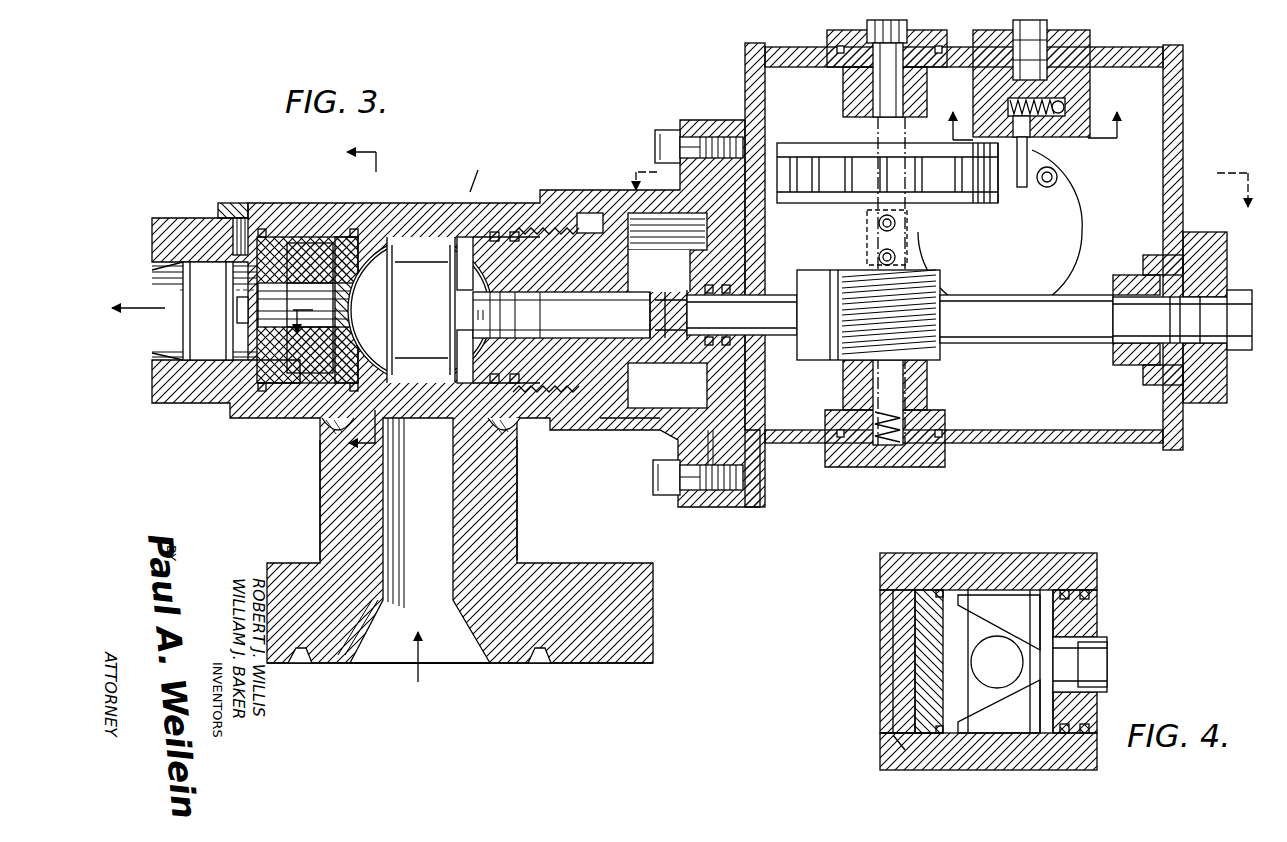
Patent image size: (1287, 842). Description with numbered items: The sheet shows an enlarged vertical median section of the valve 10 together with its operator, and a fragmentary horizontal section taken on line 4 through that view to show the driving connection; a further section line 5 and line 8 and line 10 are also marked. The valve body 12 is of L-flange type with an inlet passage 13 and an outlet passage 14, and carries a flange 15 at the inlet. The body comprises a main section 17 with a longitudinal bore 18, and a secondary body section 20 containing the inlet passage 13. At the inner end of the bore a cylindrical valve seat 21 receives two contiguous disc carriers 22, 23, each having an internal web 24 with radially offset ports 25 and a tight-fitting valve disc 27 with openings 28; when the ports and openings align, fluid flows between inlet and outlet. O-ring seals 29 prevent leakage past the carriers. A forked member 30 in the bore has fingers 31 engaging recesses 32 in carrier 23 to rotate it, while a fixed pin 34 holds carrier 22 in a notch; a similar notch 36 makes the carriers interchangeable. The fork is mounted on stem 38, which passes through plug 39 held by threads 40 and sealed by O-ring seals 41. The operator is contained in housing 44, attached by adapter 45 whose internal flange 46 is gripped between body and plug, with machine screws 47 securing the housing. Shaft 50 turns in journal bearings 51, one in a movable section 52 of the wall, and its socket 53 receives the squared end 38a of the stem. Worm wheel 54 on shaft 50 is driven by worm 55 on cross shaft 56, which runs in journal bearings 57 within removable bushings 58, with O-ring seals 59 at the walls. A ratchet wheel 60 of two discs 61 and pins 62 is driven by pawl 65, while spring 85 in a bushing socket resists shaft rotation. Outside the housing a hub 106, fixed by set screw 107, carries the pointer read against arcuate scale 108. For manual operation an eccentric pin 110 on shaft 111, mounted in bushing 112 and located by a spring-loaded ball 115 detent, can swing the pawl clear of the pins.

In FIG. 3, the section line 4- 4 is at (396, 337).
In FIG. 3, the section line 5-5 / flow passage 5 is at (383, 411).
In FIG. 3, the section line 8- 8 is at (945, 176).
In FIG. 3, the valve 10 is at (810, 152).
In FIG. 3, the body 12 is at (257, 423).
In FIG. 3, the inlet passage 13 is at (460, 650).
In FIG. 3, the outlet passage 14 is at (160, 345).
In FIG. 3, the flange 15 is at (608, 655).
In FIG. 3, the main section 17 is at (513, 232).
In FIG. 4, the main section 17 is at (1030, 560).
In FIG. 3, the bore 18 is at (457, 242).
In FIG. 4, the bore 18 is at (1075, 733).
In FIG. 3, the secondary body section 20 is at (513, 511).
In FIG. 3, the cylindrical valve seat 21 is at (273, 417).
In FIG. 3, the disc carrier 22 is at (297, 248).
In FIG. 4, the disc carrier 22 is at (880, 733).
In FIG. 3, the disc carrier 23 is at (338, 242).
In FIG. 4, the disc carrier 23 is at (923, 590).
In FIG. 3, the internal web 24 is at (300, 265).
In FIG. 3, the ports 25 is at (257, 327).
In FIG. 4, the ports 25 is at (905, 740).
In FIG. 3, the valve disc 27 is at (312, 412).
In FIG. 4, the valve disc 27 is at (893, 617).
In FIG. 3, the openings 28 is at (257, 293).
In FIG. 3, the O-ring seals 29 is at (262, 232).
In FIG. 4, the O-ring seals 29 is at (937, 735).
In FIG. 3, the forked member 30 is at (457, 333).
In FIG. 4, the forked member 30 is at (1018, 725).
In FIG. 3, the fingers 31 is at (400, 307).
In FIG. 4, the fingers 31 is at (967, 597).
In FIG. 3, the recesses 32 is at (237, 313).
In FIG. 4, the recesses 32 is at (970, 595).
In FIG. 3, the fixed pin 34 is at (240, 210).
In FIG. 3, the notch 36 is at (232, 236).
In FIG. 3, the stem 38 is at (561, 315).
In FIG. 4, the stem 38 is at (1093, 660).
In FIG. 3, the squared end 38a is at (673, 310).
In FIG. 3, the plug 39 is at (593, 380).
In FIG. 3, the threads 40 is at (528, 233).
In FIG. 3, the O-ring seals 41 is at (494, 232).
In FIG. 4, the O-ring seals 41 is at (1083, 590).
In FIG. 3, the housing 44 is at (1127, 443).
In FIG. 3, the adapter 45 is at (613, 430).
In FIG. 3, the internal flange 46 is at (586, 222).
In FIG. 3, the machine screws 47 is at (670, 135).
In FIG. 3, the shaft 50 is at (1026, 319).
In FIG. 3, the journal bearings 51 is at (1113, 355).
In FIG. 3, the movable section 52 is at (768, 238).
In FIG. 3, the socket 53 is at (713, 310).
In FIG. 3, the worm wheel 54 is at (912, 382).
In FIG. 3, the worm 55 is at (927, 287).
In FIG. 3, the cross shaft 56 is at (880, 112).
In FIG. 3, the journal bearings 57 is at (847, 98).
In FIG. 3, the bushing 58 is at (830, 42).
In FIG. 3, the O-ring seals 59 is at (707, 343).
In FIG. 3, the ratchet wheel 60 is at (848, 208).
In FIG. 3, the discs 61 is at (838, 185).
In FIG. 3, the pins 62 is at (793, 162).
In FIG. 3, the pawl 65 is at (1003, 185).
In FIG. 3, the spring 85 is at (858, 463).
In FIG. 3, the hub 106 is at (1212, 250).
In FIG. 3, the set screw 107 is at (1233, 287).
In FIG. 3, the arcuate scale 108 is at (1185, 90).
In FIG. 3, the pin 110 is at (1027, 153).
In FIG. 3, the shaft 111 is at (1033, 50).
In FIG. 3, the bushing 112 is at (1062, 77).
In FIG. 3, the spring-loaded ball 115 is at (1067, 103).